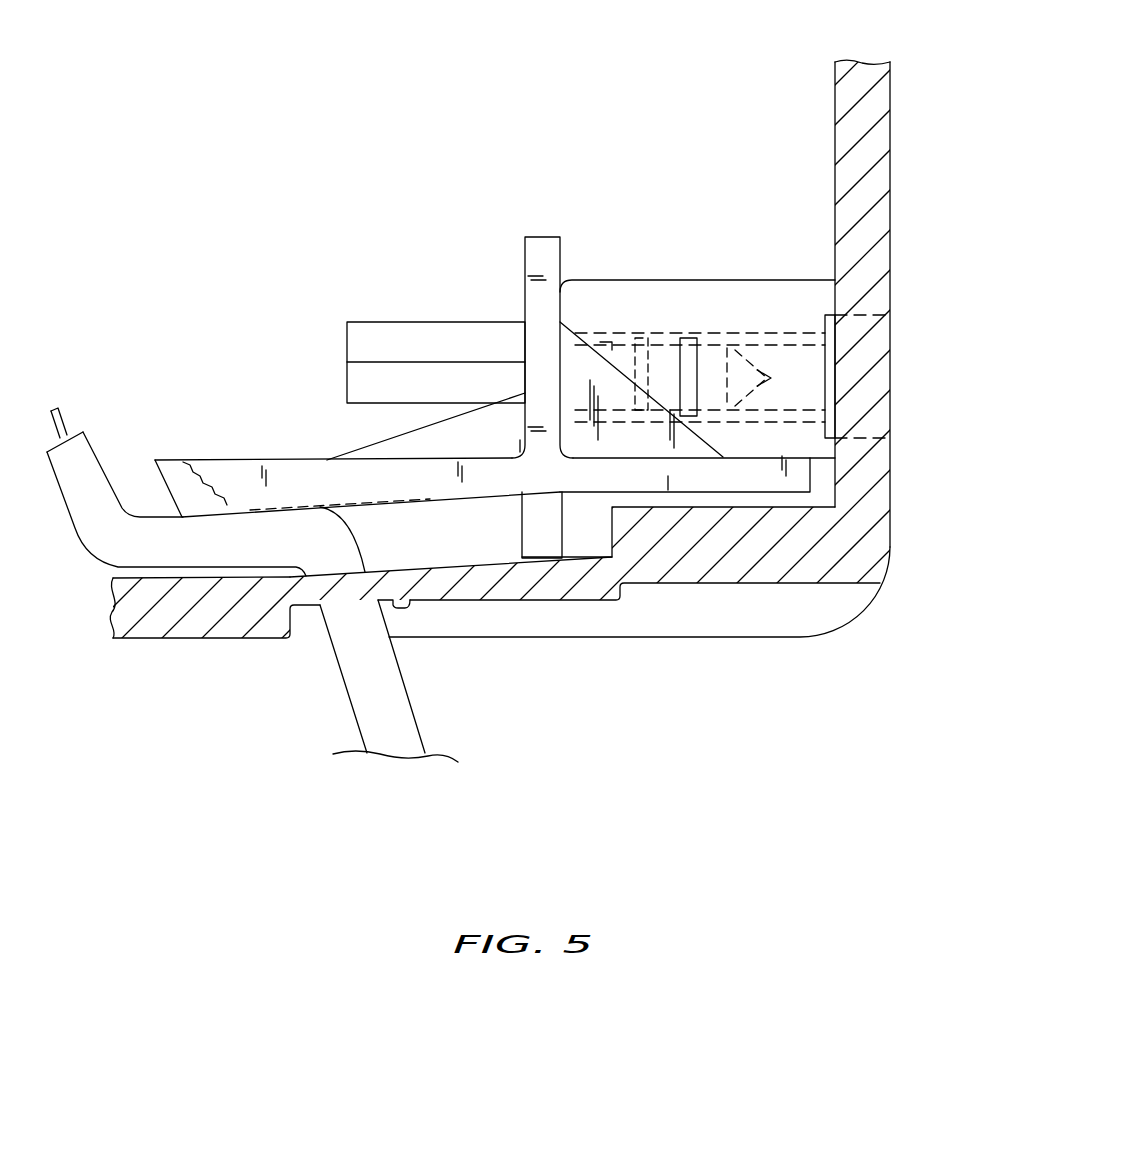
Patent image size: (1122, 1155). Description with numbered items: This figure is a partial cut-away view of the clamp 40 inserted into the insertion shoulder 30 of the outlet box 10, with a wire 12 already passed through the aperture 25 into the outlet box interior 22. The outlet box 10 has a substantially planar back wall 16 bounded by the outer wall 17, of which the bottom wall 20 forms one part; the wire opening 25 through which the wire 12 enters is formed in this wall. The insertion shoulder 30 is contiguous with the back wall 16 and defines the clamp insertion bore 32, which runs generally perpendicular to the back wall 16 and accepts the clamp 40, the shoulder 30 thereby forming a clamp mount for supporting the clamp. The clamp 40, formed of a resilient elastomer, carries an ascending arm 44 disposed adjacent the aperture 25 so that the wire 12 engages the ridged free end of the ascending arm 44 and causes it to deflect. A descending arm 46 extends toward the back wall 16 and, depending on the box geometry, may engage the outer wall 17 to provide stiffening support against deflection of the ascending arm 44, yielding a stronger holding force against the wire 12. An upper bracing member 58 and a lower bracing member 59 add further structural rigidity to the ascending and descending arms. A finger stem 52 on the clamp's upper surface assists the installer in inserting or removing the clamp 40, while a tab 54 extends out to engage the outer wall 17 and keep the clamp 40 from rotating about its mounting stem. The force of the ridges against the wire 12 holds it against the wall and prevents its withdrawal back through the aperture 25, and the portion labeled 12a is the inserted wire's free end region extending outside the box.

The outlet box 10 is at (876, 62).
The wire 12 is at (382, 732).
The lever arm 12a is at (123, 506).
The back wall 16 is at (859, 204).
The outer wall 17 is at (670, 540).
The bottom wall 20 is at (202, 625).
The outlet box interior 22 is at (596, 238).
The wire opening 25 is at (395, 603).
The insertion shoulder 30 is at (648, 282).
The clamp insertion bore 32 is at (757, 333).
The clamp 40 is at (540, 245).
The ascending arm 44 is at (245, 468).
The descending arm 46 is at (760, 476).
The finger stem 52 is at (380, 321).
The tab 54 is at (530, 538).
The upper bracing member 58 is at (393, 448).
The lower bracing member 59 is at (574, 362).